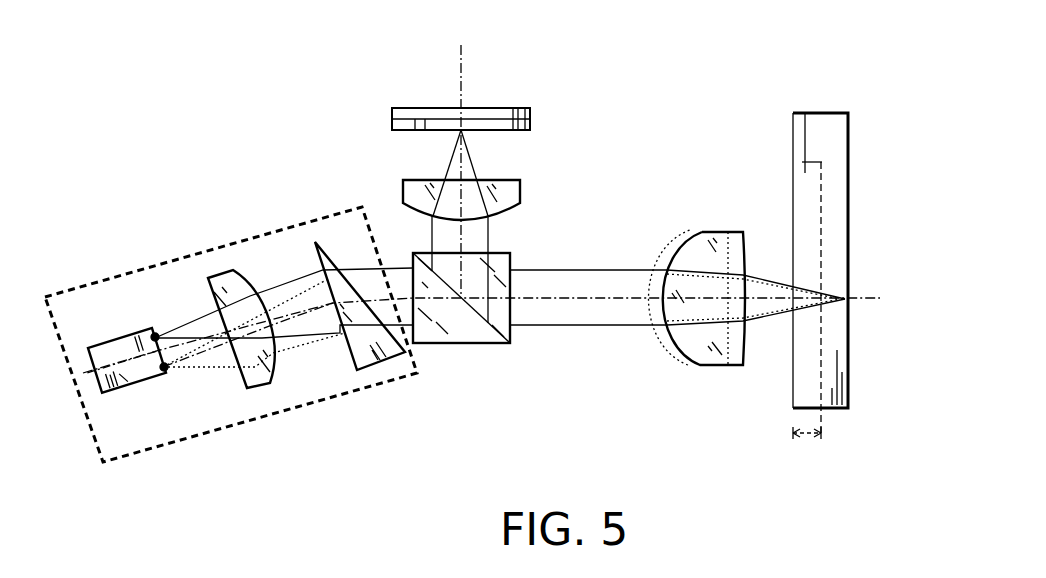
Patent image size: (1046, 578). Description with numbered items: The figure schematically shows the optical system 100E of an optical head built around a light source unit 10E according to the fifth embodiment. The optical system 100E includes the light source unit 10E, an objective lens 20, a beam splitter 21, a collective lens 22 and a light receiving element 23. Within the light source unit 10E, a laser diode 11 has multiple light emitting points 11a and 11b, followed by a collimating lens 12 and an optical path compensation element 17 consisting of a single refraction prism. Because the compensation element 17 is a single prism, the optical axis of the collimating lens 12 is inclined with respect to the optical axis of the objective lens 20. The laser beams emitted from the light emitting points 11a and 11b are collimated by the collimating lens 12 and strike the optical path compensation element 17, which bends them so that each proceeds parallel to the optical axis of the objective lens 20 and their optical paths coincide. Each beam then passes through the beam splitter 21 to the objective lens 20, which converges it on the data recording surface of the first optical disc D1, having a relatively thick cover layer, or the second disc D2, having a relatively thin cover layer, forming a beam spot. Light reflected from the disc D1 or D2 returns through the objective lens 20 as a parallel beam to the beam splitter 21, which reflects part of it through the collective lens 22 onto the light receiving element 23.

The optical system 100E is at (663, 80).
The light source unit 10E is at (268, 235).
The laser diode 11 is at (123, 390).
The light emitting point 11a is at (150, 335).
The light emitting point 11b is at (168, 375).
The collimating lens 12 is at (258, 378).
The optical path compensation element 17 is at (365, 367).
The beam splitter 21 is at (473, 342).
The collective lens 22 is at (517, 195).
The light receiving element 23 is at (530, 125).
The objective lens 20 is at (700, 353).
The first optical disc D1 is at (838, 242).
The second disc D2 is at (792, 425).